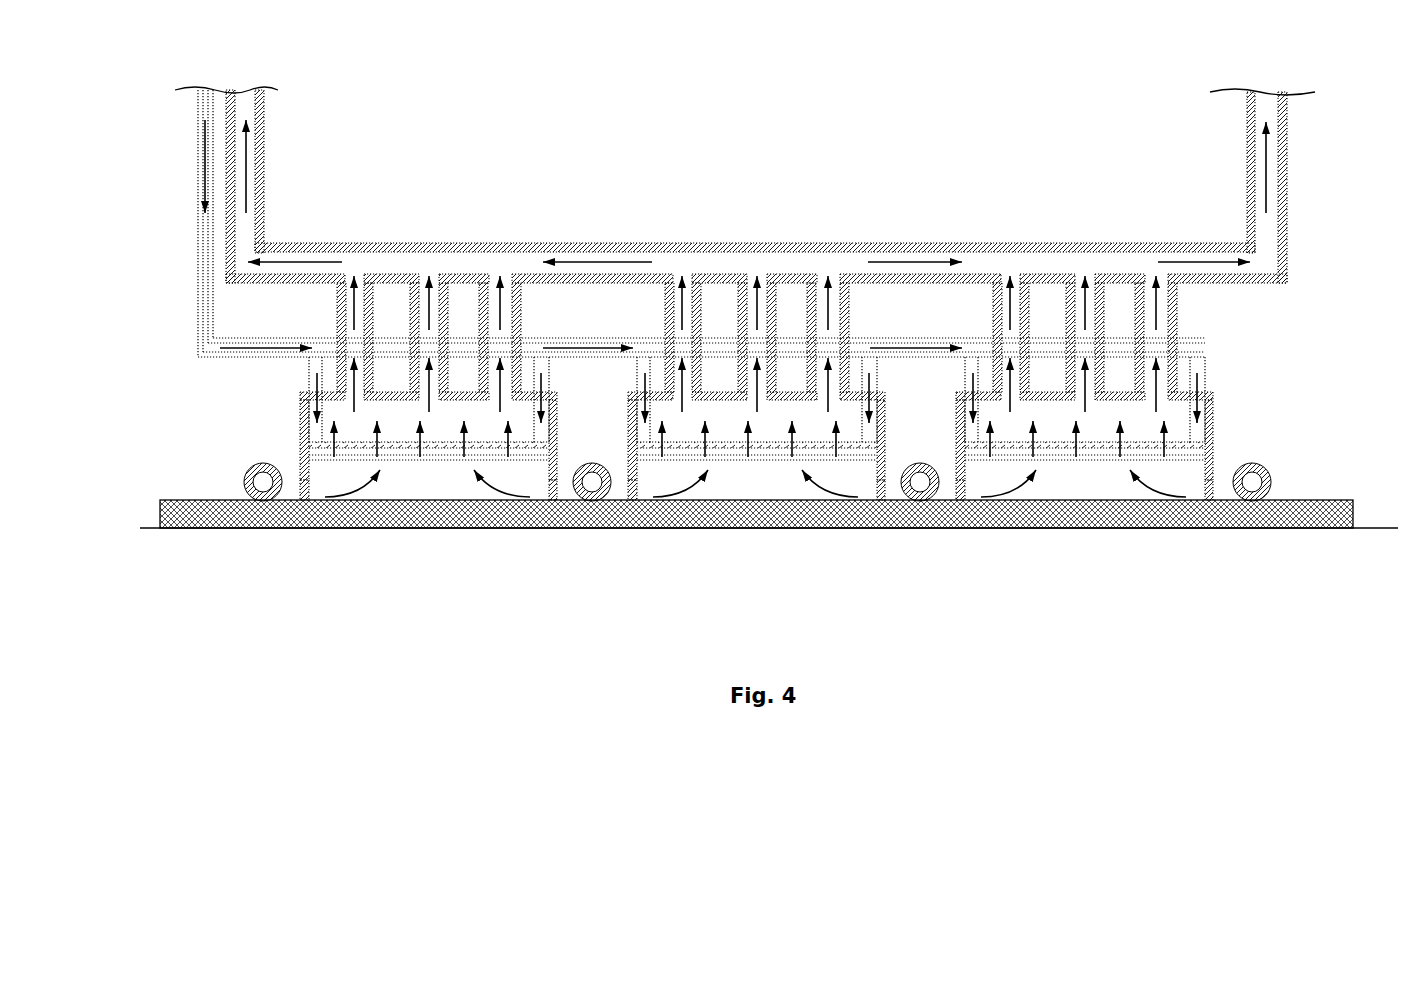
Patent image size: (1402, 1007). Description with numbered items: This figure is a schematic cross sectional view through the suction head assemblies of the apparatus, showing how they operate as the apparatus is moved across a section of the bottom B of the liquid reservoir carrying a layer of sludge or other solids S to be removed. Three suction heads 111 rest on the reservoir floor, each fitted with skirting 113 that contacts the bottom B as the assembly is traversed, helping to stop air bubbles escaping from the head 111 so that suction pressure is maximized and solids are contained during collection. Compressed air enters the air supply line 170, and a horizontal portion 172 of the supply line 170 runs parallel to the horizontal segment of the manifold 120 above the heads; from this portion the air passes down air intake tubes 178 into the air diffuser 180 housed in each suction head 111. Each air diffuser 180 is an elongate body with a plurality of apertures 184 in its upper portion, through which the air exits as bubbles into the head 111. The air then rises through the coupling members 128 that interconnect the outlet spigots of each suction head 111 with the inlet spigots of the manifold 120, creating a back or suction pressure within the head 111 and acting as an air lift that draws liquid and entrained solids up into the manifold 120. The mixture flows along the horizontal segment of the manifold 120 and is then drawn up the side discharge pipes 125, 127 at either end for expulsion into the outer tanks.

The suction head 111 is at (300, 457).
The skirting 113 is at (300, 500).
The manifold 120 is at (537, 245).
The side discharge pipe 125 is at (258, 178).
The side discharge pipe 127 is at (1253, 175).
The coupling member 128 is at (668, 303).
The air supply line 170 is at (202, 238).
The horizontal portion of the supply line 172 is at (243, 357).
The air intake tube 178 is at (645, 402).
The air diffuser 180 is at (792, 458).
The aperture 184 is at (662, 427).
The sludge or other solids S is at (253, 515).
The bottom of the liquid reservoir B is at (1368, 528).